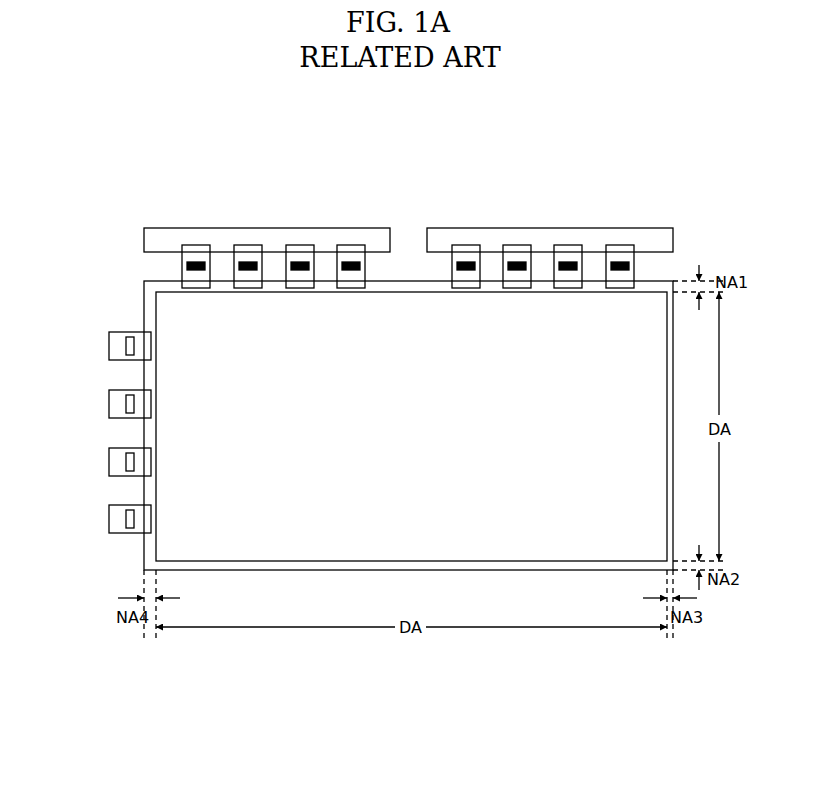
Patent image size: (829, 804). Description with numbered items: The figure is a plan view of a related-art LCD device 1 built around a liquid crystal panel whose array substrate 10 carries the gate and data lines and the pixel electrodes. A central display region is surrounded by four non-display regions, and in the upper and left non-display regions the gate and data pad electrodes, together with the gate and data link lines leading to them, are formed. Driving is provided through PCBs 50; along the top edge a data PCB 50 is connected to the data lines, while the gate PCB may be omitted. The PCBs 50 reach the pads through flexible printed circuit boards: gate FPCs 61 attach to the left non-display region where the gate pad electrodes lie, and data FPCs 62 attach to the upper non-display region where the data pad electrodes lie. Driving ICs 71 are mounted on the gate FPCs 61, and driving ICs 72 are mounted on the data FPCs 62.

The LCD device 1 is at (660, 150).
The array substrate 10 is at (142, 295).
The data PCB 50 is at (308, 236).
The gate FPC 61 is at (120, 344).
The data FPC 62 is at (196, 258).
The driving IC 71 is at (128, 402).
The driving IC 72 is at (248, 258).